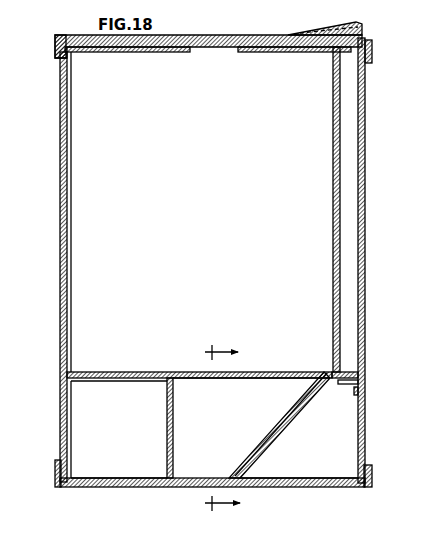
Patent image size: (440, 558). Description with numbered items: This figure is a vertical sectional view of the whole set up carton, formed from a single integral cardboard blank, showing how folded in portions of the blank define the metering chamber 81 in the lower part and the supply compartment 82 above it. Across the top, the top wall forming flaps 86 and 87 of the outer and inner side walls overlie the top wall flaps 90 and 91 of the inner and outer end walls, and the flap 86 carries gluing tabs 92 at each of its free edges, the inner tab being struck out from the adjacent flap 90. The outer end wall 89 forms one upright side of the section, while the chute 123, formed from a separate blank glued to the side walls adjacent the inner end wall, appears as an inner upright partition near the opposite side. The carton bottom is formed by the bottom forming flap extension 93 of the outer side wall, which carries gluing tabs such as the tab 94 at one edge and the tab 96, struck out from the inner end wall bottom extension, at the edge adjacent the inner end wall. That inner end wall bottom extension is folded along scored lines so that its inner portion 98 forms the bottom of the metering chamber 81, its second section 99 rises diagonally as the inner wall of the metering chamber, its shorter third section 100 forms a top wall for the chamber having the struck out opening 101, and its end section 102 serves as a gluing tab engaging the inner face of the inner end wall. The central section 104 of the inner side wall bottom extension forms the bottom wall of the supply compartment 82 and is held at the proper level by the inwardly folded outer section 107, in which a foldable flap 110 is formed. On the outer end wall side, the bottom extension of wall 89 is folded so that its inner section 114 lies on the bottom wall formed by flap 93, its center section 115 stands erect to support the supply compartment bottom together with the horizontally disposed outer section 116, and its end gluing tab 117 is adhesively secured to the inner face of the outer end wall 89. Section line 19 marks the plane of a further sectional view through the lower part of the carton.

The section line 19- 19 is at (210, 430).
The metering chamber 81 is at (366, 440).
The supply compartment 82 is at (69, 209).
The top wall forming flap of outer side wall 86 is at (228, 38).
The top wall forming flap of inner side wall 87 is at (219, 54).
The outer end wall 89 is at (60, 291).
The top wall flap of inner end wall 90 is at (300, 48).
The top wall flap of outer end wall 91 is at (153, 52).
The gluing tab 92 is at (56, 50).
The bottom forming flap extension 93 is at (130, 488).
The gluing tab 94 is at (55, 466).
The gluing tab 96 is at (384, 473).
The inner portion of inner end wall bottom extension 98 is at (309, 478).
The second section of inner end wall bottom extension 99 is at (284, 440).
The third section of inner end wall bottom extension 100 is at (338, 384).
The struck out opening 101 is at (366, 372).
The end section 102 is at (364, 396).
The central section of inner side wall bottom extension 104 is at (128, 372).
The outer section of inner side wall bottom extension 107 is at (248, 388).
The foldable flap 110 is at (299, 404).
The inner section of outer end wall bottom extension 114 is at (86, 477).
The center section of outer end wall bottom extension 115 is at (172, 405).
The outer section of outer end wall bottom extension 116 is at (131, 382).
The end gluing tab 117 is at (68, 398).
The chute 123 is at (343, 170).